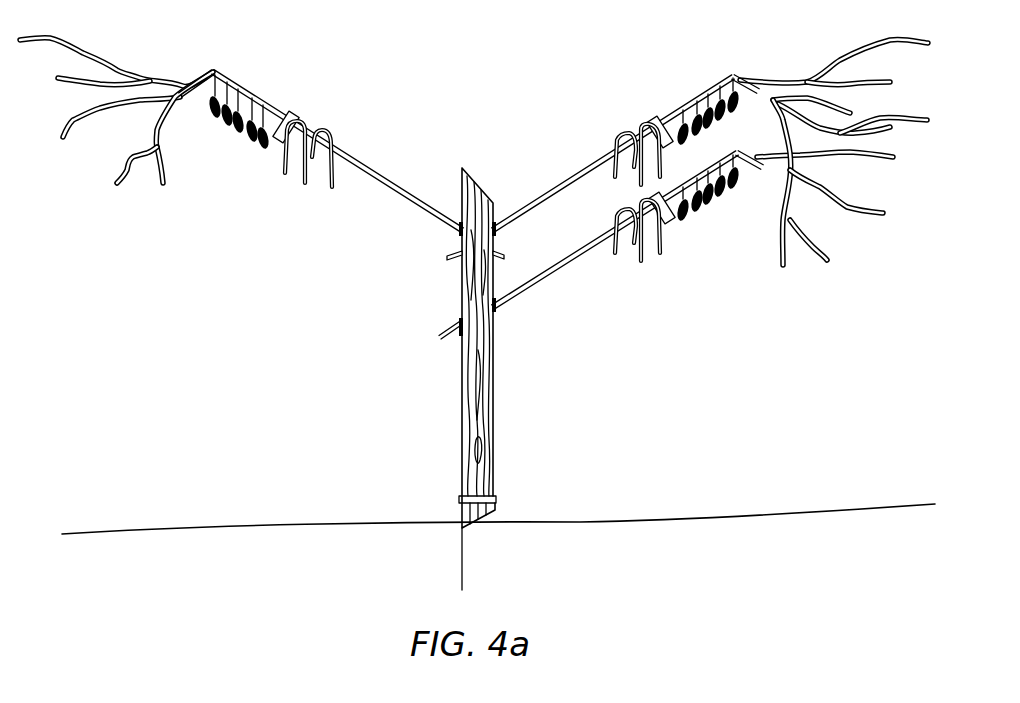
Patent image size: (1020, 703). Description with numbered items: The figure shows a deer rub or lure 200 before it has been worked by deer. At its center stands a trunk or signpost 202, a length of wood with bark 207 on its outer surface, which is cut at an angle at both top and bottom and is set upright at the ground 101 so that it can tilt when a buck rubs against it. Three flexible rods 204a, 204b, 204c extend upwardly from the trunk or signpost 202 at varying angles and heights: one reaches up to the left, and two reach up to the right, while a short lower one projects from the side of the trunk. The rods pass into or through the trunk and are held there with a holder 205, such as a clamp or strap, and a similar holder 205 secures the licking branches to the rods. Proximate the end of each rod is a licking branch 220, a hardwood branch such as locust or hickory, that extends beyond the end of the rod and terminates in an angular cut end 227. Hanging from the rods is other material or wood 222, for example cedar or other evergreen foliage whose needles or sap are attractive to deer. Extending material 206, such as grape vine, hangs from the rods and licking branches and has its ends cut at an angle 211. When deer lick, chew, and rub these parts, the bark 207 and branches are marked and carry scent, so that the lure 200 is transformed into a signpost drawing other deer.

The ground 101 is at (620, 521).
The deer rub or lure 200 is at (343, 340).
The trunk or signpost 202 is at (474, 361).
The flexible rod 204a is at (335, 157).
The flexible rod 204b is at (622, 135).
The flexible rod 204c is at (450, 330).
The holder 205 is at (655, 120).
The extending material 206 is at (295, 173).
The bark 207 is at (483, 437).
The angled cut end 211 is at (330, 178).
The licking branch 220 is at (707, 85).
The other material or wood 222 is at (225, 132).
The angular cut end 227 is at (845, 205).